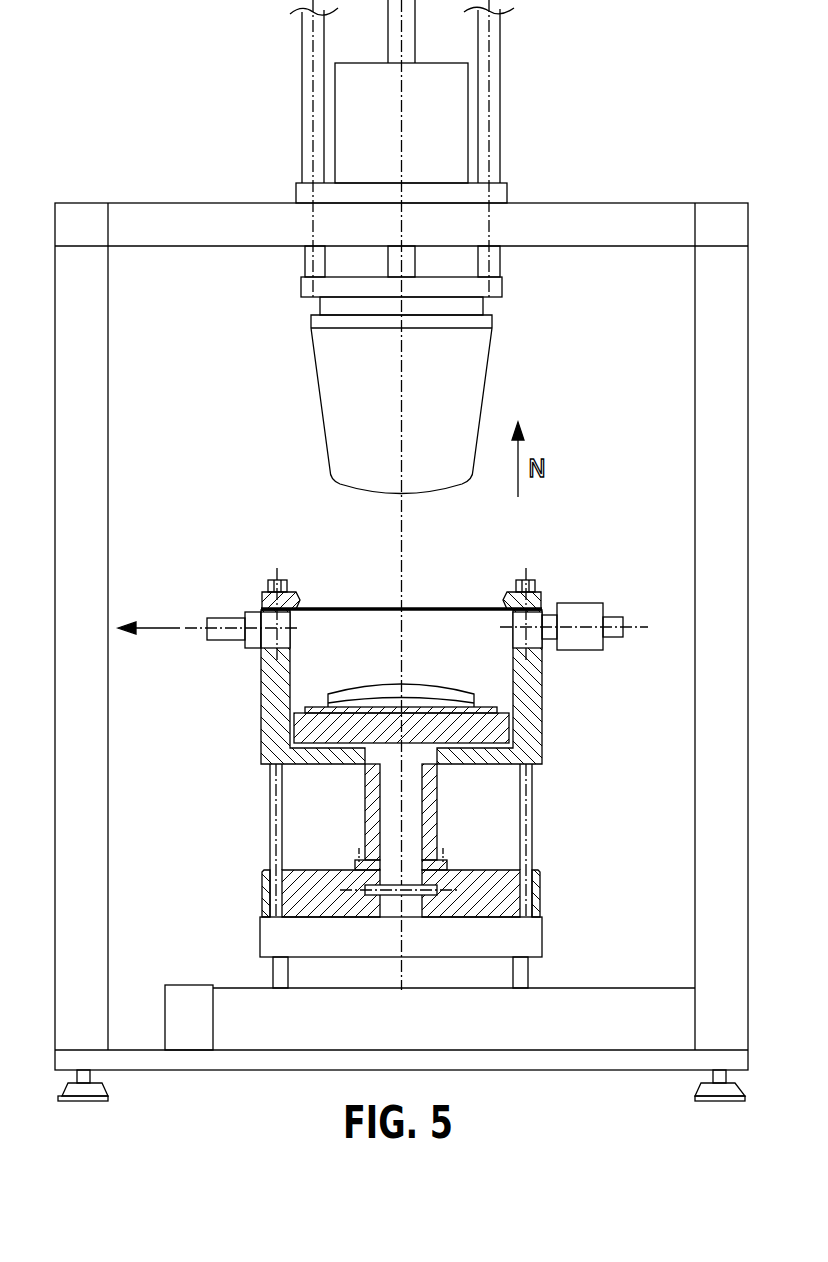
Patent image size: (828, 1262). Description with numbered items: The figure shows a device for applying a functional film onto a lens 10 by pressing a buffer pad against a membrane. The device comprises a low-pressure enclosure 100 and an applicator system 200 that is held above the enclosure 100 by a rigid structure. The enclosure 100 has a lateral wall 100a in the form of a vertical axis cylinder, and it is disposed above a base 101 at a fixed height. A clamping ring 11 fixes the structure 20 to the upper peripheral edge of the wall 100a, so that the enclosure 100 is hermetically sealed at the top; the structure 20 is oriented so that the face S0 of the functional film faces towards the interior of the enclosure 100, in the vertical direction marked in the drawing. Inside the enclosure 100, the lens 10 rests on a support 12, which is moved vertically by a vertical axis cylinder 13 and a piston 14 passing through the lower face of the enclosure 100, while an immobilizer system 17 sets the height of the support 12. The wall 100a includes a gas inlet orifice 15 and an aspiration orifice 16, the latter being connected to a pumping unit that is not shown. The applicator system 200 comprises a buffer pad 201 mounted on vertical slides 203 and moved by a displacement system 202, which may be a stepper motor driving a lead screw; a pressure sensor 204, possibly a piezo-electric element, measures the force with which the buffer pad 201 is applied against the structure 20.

The applicator system 200 is at (497, 247).
The buffer pad 201 is at (490, 353).
The displacement system 202 is at (455, 122).
The vertical slides 203 is at (319, 111).
The pressure sensor 204 is at (470, 307).
The low-pressure enclosure 100 is at (383, 744).
The lateral wall 100a is at (272, 655).
The structure 20 is at (337, 606).
The clamping ring 11 is at (508, 592).
The aspiration orifice 16 is at (220, 622).
The gas inlet orifice 15 is at (590, 606).
The face of the functional film S0 is at (430, 612).
The lens 10 is at (327, 698).
The support 12 is at (295, 715).
The piston 14 is at (500, 724).
The vertical axis cylinder 13 is at (408, 815).
The immobilizer system 17 is at (447, 891).
The base 101 is at (527, 937).